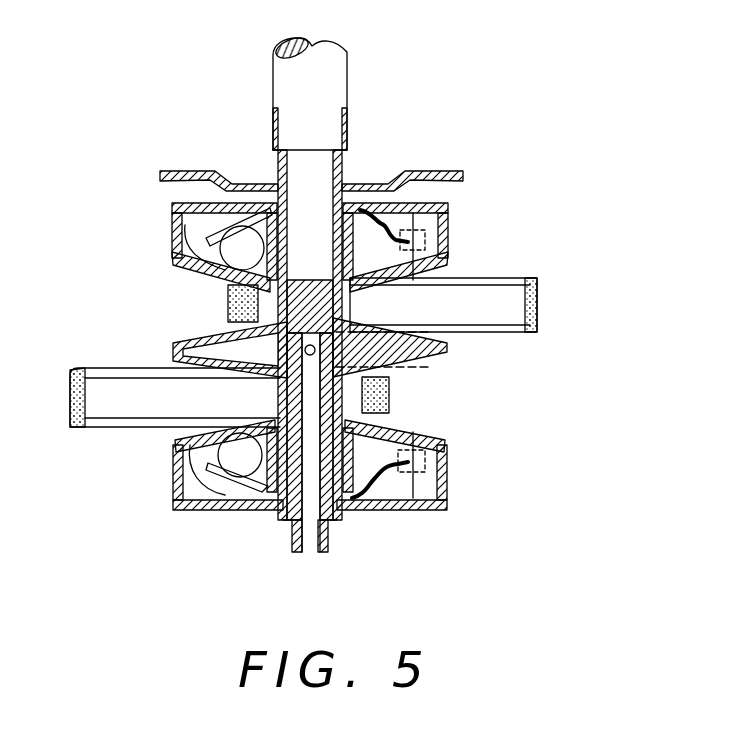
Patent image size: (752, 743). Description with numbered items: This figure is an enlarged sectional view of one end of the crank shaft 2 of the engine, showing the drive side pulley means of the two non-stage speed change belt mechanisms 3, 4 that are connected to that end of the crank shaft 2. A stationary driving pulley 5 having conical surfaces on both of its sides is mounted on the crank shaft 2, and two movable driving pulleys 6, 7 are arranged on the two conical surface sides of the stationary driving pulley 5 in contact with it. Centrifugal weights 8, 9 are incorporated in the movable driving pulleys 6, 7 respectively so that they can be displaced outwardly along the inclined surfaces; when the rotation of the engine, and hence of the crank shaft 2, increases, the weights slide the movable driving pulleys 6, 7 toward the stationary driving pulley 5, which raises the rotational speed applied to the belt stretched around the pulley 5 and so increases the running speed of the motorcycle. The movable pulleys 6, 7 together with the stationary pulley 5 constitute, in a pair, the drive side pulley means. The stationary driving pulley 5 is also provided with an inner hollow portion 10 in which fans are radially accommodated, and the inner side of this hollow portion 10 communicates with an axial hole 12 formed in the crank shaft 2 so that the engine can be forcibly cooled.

The crank shaft 2 is at (342, 88).
The non-stage speed change belt mechanism 3 is at (512, 310).
The non-stage speed change belt mechanism 4 is at (138, 405).
The stationary driving pulley 5 is at (425, 367).
The movable driving pulley 6 is at (445, 232).
The movable driving pulley 7 is at (440, 468).
The centrifugal weight 8 is at (236, 250).
The centrifugal weight 9 is at (238, 478).
The inner hollow portion 10 is at (246, 346).
The axial hole 12 is at (312, 542).